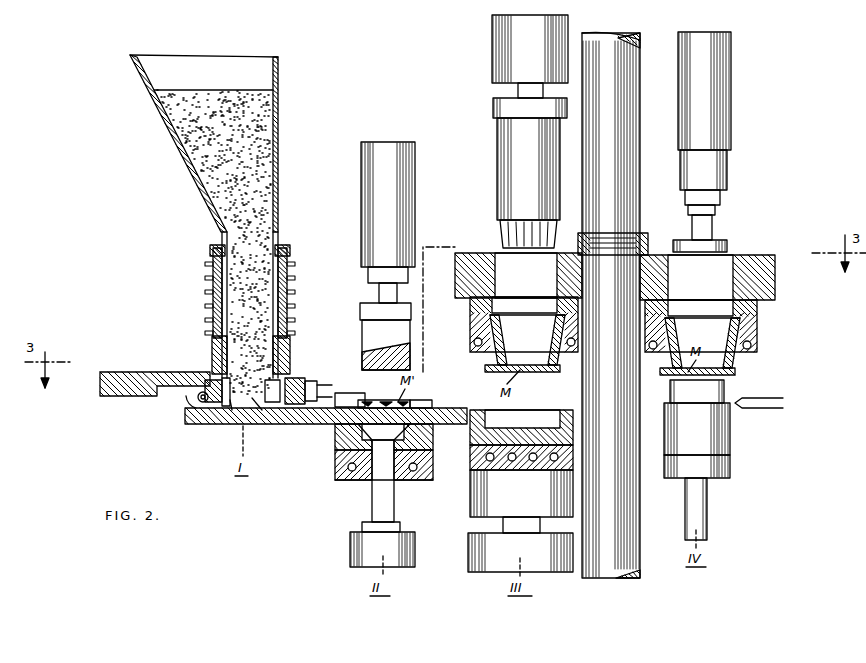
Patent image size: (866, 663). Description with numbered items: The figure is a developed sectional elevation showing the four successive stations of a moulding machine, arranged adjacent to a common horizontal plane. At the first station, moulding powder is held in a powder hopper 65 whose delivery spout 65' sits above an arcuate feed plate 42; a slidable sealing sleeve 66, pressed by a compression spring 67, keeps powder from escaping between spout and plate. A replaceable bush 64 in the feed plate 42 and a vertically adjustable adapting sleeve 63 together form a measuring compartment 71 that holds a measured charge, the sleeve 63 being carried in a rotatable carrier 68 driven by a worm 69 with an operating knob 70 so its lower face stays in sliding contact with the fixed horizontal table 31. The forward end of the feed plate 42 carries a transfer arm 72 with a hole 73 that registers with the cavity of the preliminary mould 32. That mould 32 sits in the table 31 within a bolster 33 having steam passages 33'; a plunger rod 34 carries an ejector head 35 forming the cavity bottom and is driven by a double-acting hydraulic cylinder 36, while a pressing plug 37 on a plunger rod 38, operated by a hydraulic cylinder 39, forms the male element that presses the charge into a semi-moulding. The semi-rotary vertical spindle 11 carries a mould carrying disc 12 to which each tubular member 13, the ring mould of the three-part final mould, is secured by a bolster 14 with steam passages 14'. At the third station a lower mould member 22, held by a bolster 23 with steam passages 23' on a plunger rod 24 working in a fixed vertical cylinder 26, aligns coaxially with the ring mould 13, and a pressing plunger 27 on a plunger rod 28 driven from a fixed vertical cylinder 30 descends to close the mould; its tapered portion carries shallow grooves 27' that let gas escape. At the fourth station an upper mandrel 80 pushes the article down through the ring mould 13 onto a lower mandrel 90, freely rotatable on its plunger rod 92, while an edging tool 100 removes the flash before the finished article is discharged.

The powder hopper 65 is at (204, 224).
The delivery spout 65' is at (295, 355).
The compression spring 67 is at (212, 270).
The sealing sleeve 66 is at (212, 342).
The bush 64 is at (212, 380).
The rotatable carrier 68 is at (292, 380).
The arcuate feed plate 42 is at (110, 372).
The operating knob 70 is at (196, 397).
The worm 69 is at (194, 406).
The fixed horizontal table 31 is at (206, 425).
The adapting sleeve 63 is at (230, 412).
The measuring compartment 71 is at (255, 404).
The transfer arm 72 is at (350, 392).
The hole 73 is at (380, 400).
The ejector head 35 is at (425, 406).
The double-acting hydraulic cylinder 39 is at (388, 212).
The plunger rod 38 is at (379, 292).
The pressing plug 37 is at (385, 336).
The plunger rod 34 is at (388, 508).
The preliminary mould 32 is at (338, 446).
The bolster 33 is at (369, 465).
The steam passages 33' is at (382, 472).
The double-acting hydraulic cylinder 36 is at (382, 544).
The fixed vertical cylinder 30 is at (530, 49).
The plunger rod 28 is at (518, 90).
The pressing plunger 27 is at (530, 159).
The grooves 27' is at (508, 234).
The mould carrying disc 12 is at (465, 262).
The bolster 14 is at (611, 324).
The steam passages 14' is at (616, 351).
The tubular member 13 is at (490, 358).
The semi-rotary vertical spindle 11 is at (613, 305).
The mandrel 80 is at (730, 246).
The lower mould member 22 is at (545, 420).
The bolster 23 is at (508, 457).
The steam passages 23' is at (522, 474).
The plunger rod 24 is at (521, 525).
The fixed vertical cylinder 26 is at (520, 552).
The mandrel 90 is at (672, 393).
The plunger rod 92 is at (707, 495).
The edging tool 100 is at (745, 400).